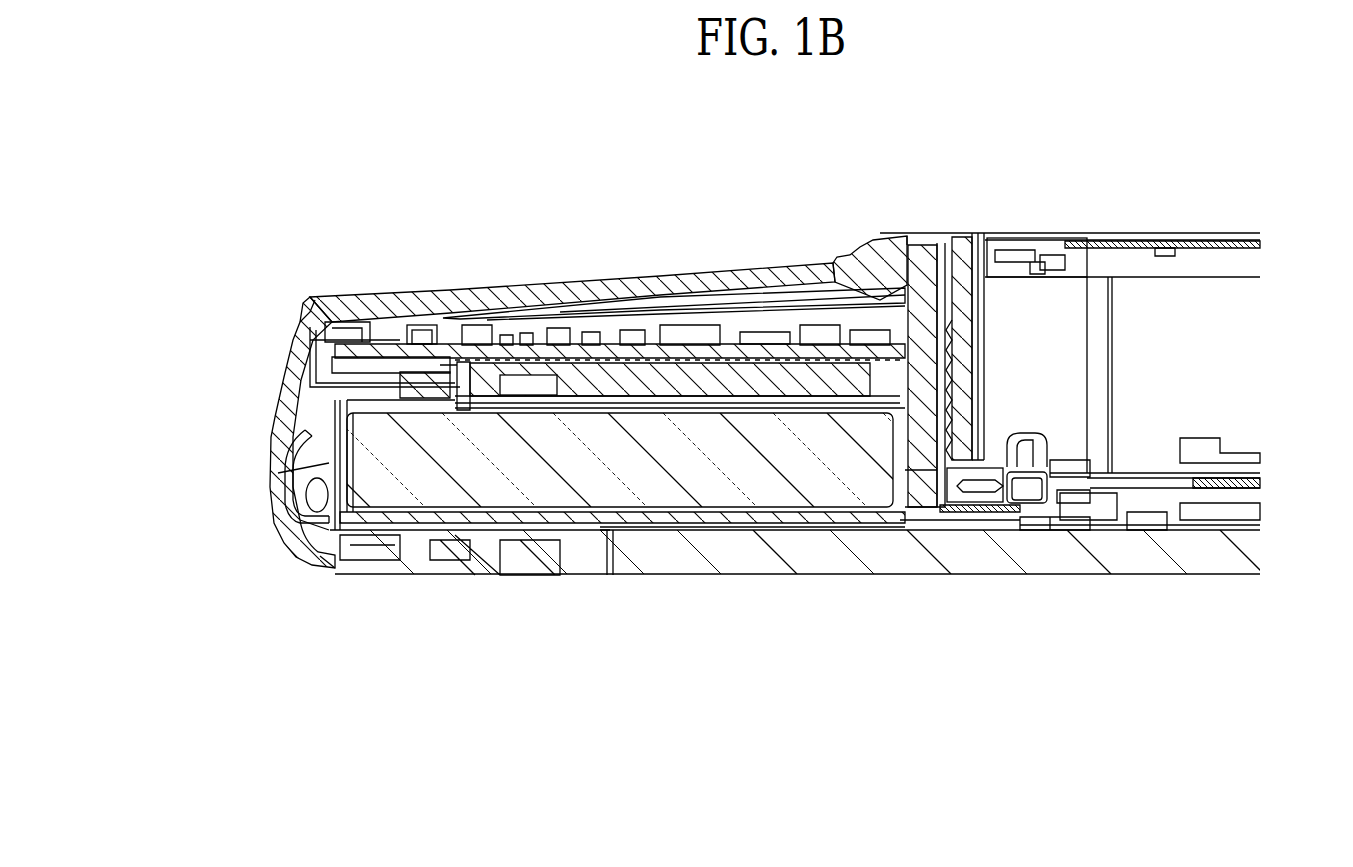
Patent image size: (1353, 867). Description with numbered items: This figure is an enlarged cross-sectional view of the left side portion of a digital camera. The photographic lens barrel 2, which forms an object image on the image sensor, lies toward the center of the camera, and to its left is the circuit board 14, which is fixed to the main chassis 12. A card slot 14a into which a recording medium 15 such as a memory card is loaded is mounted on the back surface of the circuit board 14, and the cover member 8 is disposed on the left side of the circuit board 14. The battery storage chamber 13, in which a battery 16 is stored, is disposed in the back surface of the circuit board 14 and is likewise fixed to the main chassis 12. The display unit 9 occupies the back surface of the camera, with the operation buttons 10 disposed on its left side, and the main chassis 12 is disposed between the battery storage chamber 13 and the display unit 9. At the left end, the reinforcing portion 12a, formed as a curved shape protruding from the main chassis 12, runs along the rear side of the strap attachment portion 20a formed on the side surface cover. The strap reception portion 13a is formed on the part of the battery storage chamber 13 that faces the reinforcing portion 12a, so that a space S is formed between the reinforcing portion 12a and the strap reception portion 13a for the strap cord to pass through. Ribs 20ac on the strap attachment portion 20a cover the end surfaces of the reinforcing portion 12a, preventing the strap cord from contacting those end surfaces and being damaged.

The photographic lens barrel 2 is at (1024, 316).
The cover member 8 is at (416, 330).
The display unit 9 is at (873, 555).
The operation buttons 10 is at (462, 556).
The main chassis 12 is at (623, 555).
The reinforcing portion 12a is at (276, 490).
The battery storage chamber 13 is at (362, 320).
The strap reception portion 13a is at (368, 538).
The circuit board 14 is at (685, 312).
The card slot 14a is at (479, 368).
The recording medium 15 is at (788, 340).
The battery 16 is at (716, 488).
The strap attachment portion 20a is at (282, 533).
The ribs 20ac is at (290, 508).
The space S is at (330, 568).